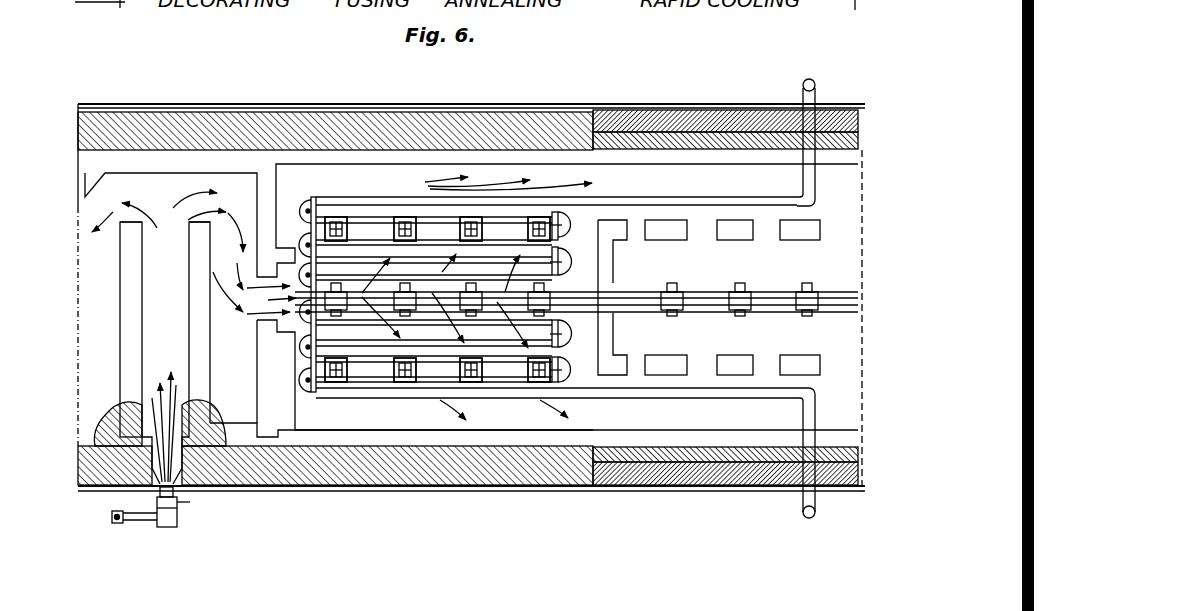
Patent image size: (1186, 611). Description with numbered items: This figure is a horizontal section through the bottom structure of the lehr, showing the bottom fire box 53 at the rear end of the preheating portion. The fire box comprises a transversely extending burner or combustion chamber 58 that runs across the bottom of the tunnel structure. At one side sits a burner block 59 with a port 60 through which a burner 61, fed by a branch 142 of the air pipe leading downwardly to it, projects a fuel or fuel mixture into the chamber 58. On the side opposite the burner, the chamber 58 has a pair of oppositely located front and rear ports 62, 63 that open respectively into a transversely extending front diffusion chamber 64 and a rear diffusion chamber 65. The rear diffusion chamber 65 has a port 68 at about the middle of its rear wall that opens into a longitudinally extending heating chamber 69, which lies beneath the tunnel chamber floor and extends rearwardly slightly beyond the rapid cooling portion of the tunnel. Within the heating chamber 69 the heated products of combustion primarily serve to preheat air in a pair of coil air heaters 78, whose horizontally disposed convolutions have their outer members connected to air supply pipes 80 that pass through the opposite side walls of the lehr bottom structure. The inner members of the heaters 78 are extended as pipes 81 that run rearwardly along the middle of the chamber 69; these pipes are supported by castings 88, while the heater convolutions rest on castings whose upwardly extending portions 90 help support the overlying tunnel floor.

The bottom fire box 53 is at (90, 489).
The burner or combustion chamber 58 is at (188, 383).
The burner block 59 is at (176, 492).
The port 60 is at (160, 487).
The burner 61 is at (165, 528).
The front port 62 is at (120, 220).
The rear port 63 is at (203, 219).
The front diffusion chamber 64 is at (120, 366).
The rear diffusion chamber 65 is at (209, 385).
The port 68 is at (265, 319).
The heating chamber 69 is at (417, 440).
The coil air heaters 78 is at (338, 204).
The air supply pipes 80 is at (811, 100).
The pipes 81 is at (766, 310).
The castings 88 is at (735, 293).
The upwardly extending portions 90 is at (538, 217).
The branch 142 is at (113, 524).